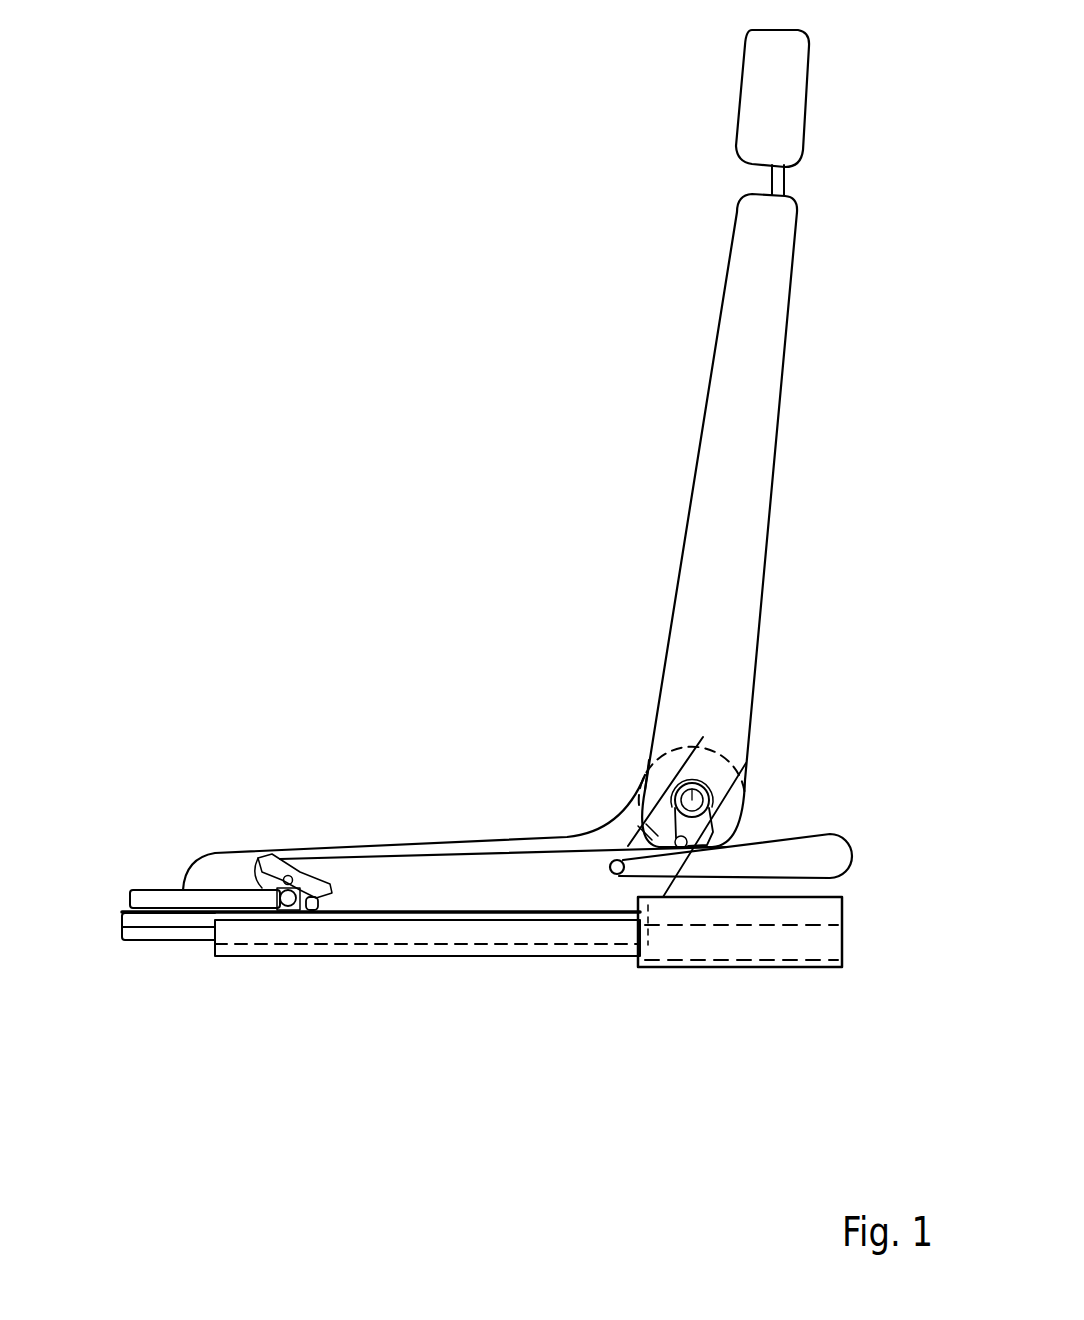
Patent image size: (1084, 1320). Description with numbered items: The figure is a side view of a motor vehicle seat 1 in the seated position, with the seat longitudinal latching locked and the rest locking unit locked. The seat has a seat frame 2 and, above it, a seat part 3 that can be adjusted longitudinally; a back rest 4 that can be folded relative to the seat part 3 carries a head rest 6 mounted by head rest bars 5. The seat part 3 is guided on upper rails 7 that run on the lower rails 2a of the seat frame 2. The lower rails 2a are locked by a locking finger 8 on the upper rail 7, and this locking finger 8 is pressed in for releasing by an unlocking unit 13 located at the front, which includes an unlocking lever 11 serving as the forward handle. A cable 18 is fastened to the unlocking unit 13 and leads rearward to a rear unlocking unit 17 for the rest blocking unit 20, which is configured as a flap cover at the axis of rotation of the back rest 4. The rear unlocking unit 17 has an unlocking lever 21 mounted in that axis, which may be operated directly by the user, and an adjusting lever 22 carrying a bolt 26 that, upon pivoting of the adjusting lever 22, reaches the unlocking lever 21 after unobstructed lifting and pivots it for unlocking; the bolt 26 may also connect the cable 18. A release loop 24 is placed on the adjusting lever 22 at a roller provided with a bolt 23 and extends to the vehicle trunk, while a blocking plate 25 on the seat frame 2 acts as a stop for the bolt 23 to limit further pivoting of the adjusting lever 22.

The motor vehicle seat 1 is at (324, 318).
The seat frame 2 is at (467, 991).
The lower rails 2a is at (228, 960).
The seat part 3 is at (219, 862).
The back rest 4 is at (703, 460).
The head rest bars 5 is at (772, 178).
The head rest 6 is at (747, 88).
The upper rails 7 is at (128, 943).
The locking finger 8 is at (327, 900).
The unlocking lever 11 is at (157, 893).
The unlocking unit 13 is at (297, 842).
The rear unlocking unit 17 is at (568, 728).
The cable 18 is at (453, 852).
The rest blocking unit 20 is at (692, 785).
The unlocking lever 21 is at (710, 818).
The adjusting lever 22 is at (627, 830).
The bolt 23 is at (607, 871).
The release loop 24 is at (815, 835).
The blocking plate 25 is at (687, 945).
The bolt 26 is at (650, 773).